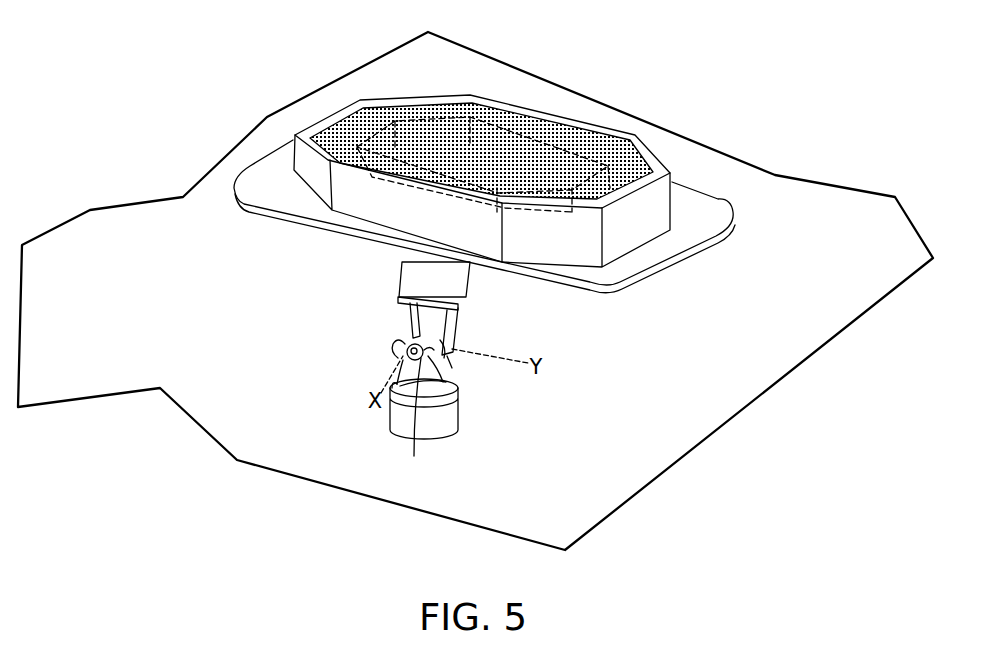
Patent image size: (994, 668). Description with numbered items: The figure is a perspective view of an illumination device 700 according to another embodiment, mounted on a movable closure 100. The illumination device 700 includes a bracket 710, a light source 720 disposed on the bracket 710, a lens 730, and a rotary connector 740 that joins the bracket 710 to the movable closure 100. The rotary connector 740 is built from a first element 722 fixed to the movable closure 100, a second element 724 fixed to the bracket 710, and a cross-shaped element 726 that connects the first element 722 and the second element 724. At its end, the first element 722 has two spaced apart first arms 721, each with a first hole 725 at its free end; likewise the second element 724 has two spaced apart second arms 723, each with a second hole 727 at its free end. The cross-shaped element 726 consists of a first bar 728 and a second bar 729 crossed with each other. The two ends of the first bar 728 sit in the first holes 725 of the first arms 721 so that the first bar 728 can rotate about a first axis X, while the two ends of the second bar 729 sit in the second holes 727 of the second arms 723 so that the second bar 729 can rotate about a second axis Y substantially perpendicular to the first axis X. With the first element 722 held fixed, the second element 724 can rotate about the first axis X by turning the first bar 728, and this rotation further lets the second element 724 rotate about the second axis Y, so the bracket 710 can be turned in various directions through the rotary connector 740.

The movable closure 100 is at (846, 186).
The illumination device 700 is at (470, 86).
The bracket 710 is at (732, 211).
The light source 720 is at (467, 204).
The lens 730 is at (579, 120).
The rotary connector 740 is at (491, 320).
The second element 724 is at (392, 278).
The second arms 723 is at (402, 316).
The second holes 727 is at (398, 345).
The first bar 728 is at (385, 350).
The first holes 725 is at (398, 358).
The cross-shaped element 726 is at (453, 362).
The first arms 721 is at (449, 374).
The first element 722 is at (462, 421).
The second bar 729 is at (418, 418).